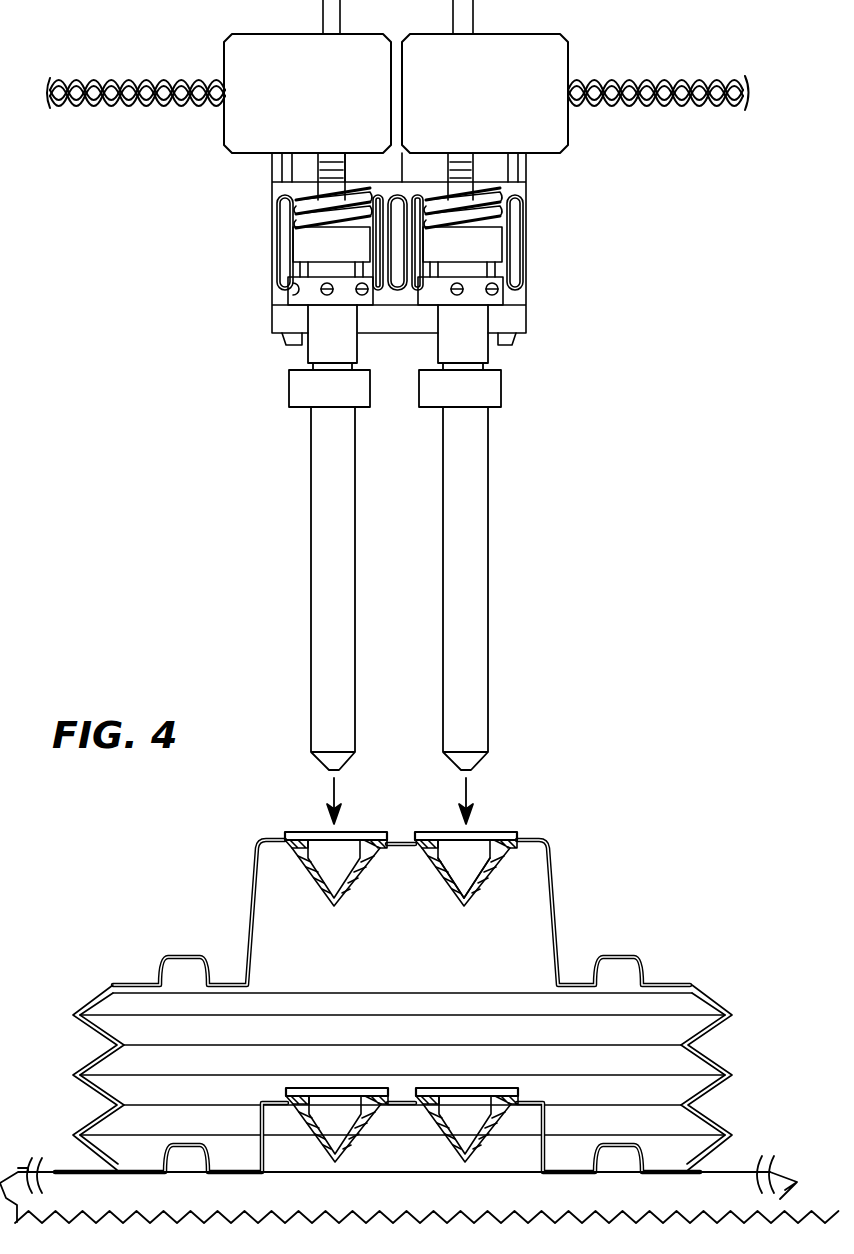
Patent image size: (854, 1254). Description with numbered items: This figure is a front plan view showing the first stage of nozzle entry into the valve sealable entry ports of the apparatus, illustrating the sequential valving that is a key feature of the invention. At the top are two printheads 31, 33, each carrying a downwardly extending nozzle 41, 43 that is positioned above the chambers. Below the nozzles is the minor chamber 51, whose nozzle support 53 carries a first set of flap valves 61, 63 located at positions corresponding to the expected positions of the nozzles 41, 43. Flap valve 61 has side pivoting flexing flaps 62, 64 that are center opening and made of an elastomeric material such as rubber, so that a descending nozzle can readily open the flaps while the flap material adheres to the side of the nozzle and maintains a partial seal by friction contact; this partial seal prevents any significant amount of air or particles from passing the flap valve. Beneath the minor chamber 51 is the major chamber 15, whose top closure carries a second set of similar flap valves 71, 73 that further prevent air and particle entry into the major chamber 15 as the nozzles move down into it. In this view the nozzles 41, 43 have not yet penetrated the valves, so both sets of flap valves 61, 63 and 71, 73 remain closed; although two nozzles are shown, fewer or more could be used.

The major chamber 15 is at (737, 1172).
The printhead 31 is at (517, 33).
The printhead 33 is at (283, 33).
The nozzle 41 is at (480, 528).
The nozzle 43 is at (320, 528).
The minor chamber 51 is at (694, 1020).
The nozzle support 53 is at (560, 940).
The flap valve 61 is at (500, 836).
The flexing flap 62 is at (470, 890).
The flap valve 63 is at (300, 836).
The flexing flap 64 is at (448, 886).
The flap valve 71 is at (475, 1108).
The flap valve 73 is at (327, 1108).